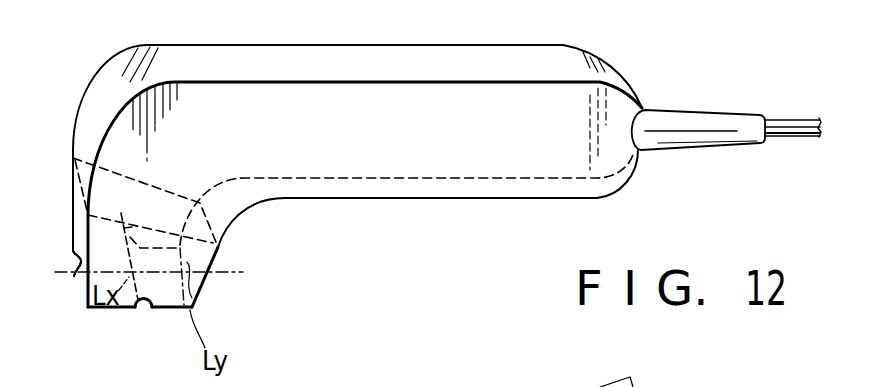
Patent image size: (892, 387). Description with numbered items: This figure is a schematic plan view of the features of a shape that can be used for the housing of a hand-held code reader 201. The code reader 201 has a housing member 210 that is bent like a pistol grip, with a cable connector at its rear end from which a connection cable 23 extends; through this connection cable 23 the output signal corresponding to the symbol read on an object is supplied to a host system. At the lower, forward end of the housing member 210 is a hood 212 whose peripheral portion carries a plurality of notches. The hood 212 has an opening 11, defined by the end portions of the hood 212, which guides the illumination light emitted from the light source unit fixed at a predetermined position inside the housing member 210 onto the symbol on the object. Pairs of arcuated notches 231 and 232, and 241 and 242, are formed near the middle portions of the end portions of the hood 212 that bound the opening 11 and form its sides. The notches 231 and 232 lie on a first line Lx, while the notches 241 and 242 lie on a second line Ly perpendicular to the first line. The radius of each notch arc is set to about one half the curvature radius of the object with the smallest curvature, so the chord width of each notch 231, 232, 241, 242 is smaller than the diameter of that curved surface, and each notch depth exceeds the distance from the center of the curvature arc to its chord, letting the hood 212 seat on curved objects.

The code reader 201 is at (603, 35).
The housing member 210 is at (362, 55).
The connection cable 23 is at (793, 138).
The arcuated notch 232 is at (122, 243).
The hood 212 is at (214, 256).
The arcuated notch 242 is at (205, 275).
The arcuated notch 231 is at (143, 311).
The opening 11 is at (112, 319).
The arcuated notch 241 is at (74, 277).